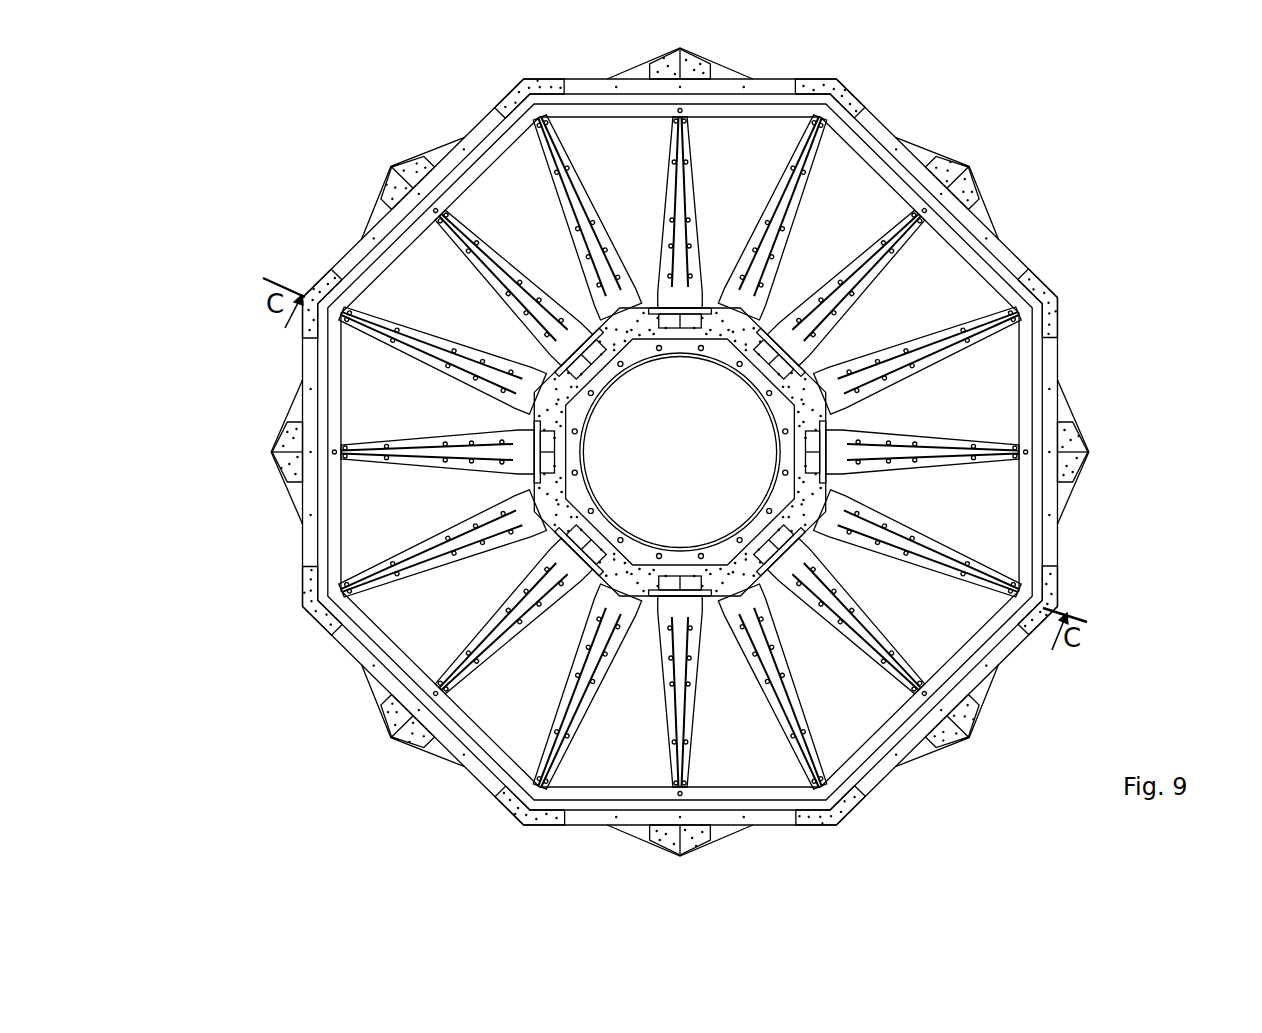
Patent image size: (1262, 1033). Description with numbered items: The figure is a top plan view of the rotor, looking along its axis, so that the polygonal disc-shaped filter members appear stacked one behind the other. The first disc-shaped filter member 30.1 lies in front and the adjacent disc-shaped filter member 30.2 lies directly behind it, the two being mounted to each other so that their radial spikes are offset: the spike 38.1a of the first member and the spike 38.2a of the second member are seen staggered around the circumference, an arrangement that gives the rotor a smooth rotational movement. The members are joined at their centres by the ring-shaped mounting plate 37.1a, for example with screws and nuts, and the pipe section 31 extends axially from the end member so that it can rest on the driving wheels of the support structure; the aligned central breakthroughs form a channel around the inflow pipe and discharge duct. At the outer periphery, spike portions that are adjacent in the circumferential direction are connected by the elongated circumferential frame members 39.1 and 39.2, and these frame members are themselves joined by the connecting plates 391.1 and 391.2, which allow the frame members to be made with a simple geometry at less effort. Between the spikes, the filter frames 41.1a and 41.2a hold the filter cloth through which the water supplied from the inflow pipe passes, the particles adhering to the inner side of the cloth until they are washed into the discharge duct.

The first disc-shaped filter member 30.1 is at (1015, 265).
The disc-shaped filter member 30.2 is at (987, 220).
The circumferential frame member 39.1 is at (883, 130).
The circumferential frame member 39.2 is at (285, 487).
The connecting plate 391.1 is at (1057, 313).
The connecting plate 391.2 is at (973, 178).
The spike 38.1a is at (927, 368).
The spike 38.2a is at (927, 470).
The filter frame 41.1a is at (436, 338).
The filter frame 41.2a is at (451, 232).
The pipe section 31 is at (787, 477).
The ring-shaped mounting plate 37.1a is at (733, 563).